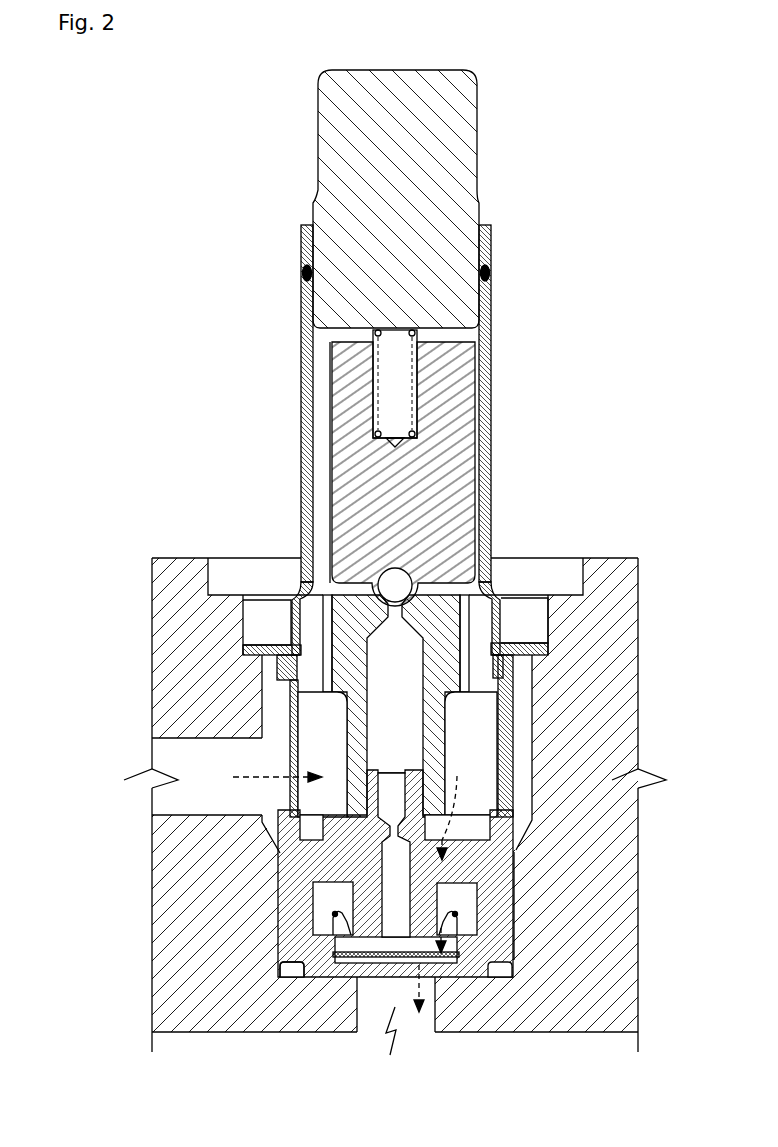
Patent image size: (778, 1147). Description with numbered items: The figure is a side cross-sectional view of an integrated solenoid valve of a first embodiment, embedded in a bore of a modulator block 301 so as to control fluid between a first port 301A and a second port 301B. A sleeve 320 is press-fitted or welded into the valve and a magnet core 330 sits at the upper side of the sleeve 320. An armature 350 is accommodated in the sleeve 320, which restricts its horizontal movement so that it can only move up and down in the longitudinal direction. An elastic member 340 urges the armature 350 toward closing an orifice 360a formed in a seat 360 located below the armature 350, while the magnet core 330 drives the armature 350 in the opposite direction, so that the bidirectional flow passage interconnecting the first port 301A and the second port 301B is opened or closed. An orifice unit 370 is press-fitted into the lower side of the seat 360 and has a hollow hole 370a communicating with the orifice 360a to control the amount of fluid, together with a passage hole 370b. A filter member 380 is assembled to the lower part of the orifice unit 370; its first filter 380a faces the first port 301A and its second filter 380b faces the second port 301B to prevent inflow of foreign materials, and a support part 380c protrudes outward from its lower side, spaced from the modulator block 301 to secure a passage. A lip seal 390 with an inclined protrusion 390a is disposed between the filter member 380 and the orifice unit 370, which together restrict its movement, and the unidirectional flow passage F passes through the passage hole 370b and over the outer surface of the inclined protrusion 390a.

The modulator block 301 is at (632, 638).
The first port 301A is at (188, 756).
The second port 301B is at (372, 1000).
The sleeve 320 is at (305, 296).
The magnet core 330 is at (330, 130).
The elastic member 340 is at (377, 380).
The armature 350 is at (347, 460).
The seat 360 is at (295, 617).
The orifice 360a is at (382, 597).
The orifice unit 370 is at (313, 858).
The hollow hole 370a is at (392, 892).
The passage hole 370b is at (514, 855).
The filter member 380 is at (512, 707).
The first filter 380a is at (298, 706).
The second filter 380b is at (445, 957).
The support part 380c is at (323, 970).
The lip seal 390 is at (313, 912).
The inclined protrusion 390a is at (475, 933).
The unidirectional flow passage F is at (248, 778).